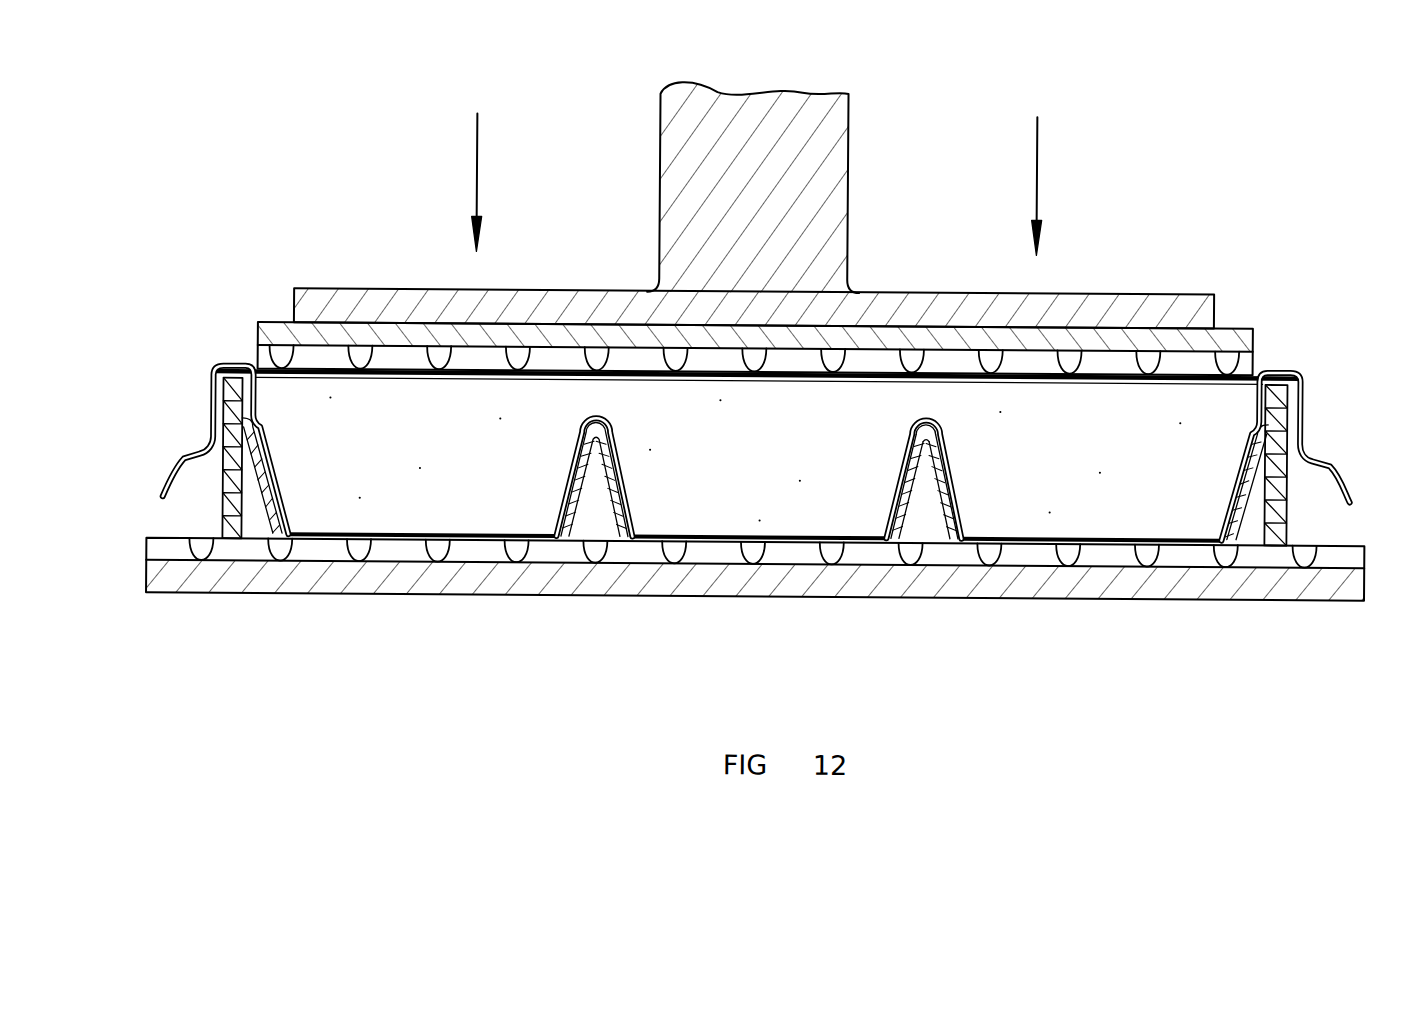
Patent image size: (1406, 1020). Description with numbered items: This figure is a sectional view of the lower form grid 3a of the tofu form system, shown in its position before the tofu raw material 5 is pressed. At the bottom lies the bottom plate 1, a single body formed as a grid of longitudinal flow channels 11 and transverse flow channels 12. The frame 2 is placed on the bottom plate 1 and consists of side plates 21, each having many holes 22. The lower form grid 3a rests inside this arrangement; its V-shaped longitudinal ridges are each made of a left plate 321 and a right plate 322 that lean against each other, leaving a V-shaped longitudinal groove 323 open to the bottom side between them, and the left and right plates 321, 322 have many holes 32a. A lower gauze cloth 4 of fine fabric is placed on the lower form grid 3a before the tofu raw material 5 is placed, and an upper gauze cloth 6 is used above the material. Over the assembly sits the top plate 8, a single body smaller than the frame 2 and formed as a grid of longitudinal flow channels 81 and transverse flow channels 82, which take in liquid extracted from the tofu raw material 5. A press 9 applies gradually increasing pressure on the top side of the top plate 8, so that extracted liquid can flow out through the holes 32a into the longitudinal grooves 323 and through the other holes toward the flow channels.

The bottom plate 1 is at (125, 552).
The frame 2 is at (217, 481).
The lower form grid 3a is at (288, 519).
The lower gauze cloth 4 is at (488, 530).
The tofu raw material 5 is at (685, 504).
The upper gauze cloth 6 is at (467, 390).
The top plate 8 is at (1253, 327).
The press 9 is at (398, 309).
The longitudinal flow channels 11 is at (340, 565).
The transverse flow channels 12 is at (400, 556).
The side plates 21 is at (1272, 426).
The holes 22 is at (1278, 487).
The holes 32a is at (990, 532).
The longitudinal flow channels 81 is at (518, 361).
The transverse flow channels 82 is at (1248, 360).
The left plate 321 is at (913, 527).
The right plate 322 is at (957, 511).
The V-shaped longitudinal groove 323 is at (906, 536).